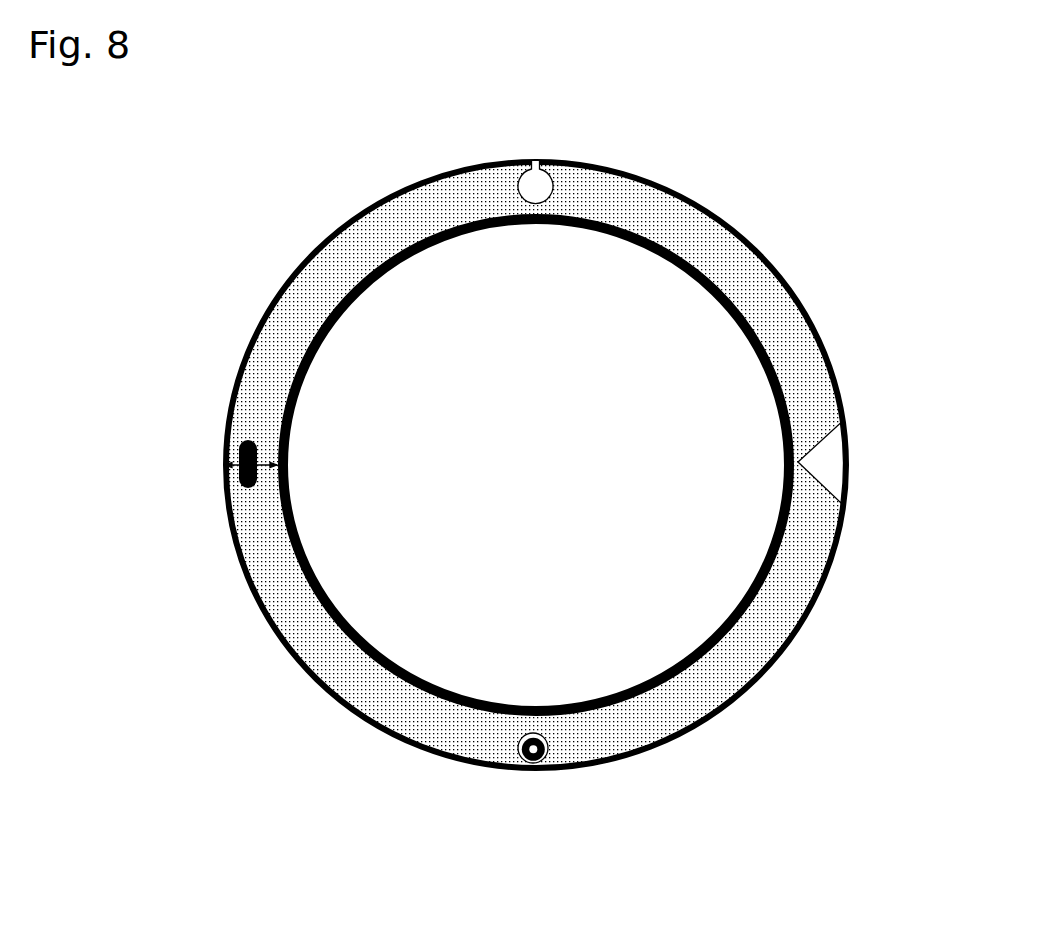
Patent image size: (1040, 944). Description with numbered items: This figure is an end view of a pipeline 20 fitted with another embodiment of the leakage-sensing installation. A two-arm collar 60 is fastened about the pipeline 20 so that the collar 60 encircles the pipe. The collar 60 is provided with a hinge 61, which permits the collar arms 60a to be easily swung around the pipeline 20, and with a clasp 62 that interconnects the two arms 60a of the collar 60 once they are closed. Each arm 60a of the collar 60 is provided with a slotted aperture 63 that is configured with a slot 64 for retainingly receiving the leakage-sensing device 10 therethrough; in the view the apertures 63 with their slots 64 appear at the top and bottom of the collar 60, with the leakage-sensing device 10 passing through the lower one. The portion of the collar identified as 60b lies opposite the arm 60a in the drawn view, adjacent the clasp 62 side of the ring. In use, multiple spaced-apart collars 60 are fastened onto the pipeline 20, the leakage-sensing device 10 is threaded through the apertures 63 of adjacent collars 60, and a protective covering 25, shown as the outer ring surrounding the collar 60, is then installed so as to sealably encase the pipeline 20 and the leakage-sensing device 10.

The leakage-sensing device 10 is at (550, 747).
The pipeline 20 is at (612, 217).
The protective covering 25 is at (272, 295).
The 2-arm collar 60 is at (720, 265).
The collar arm 60a is at (772, 327).
The outer portion of annular body 60b is at (772, 595).
The hinge 61 is at (798, 462).
The clasp 62 is at (248, 467).
The slotted aperture 63 is at (518, 187).
The slot 64 is at (536, 162).